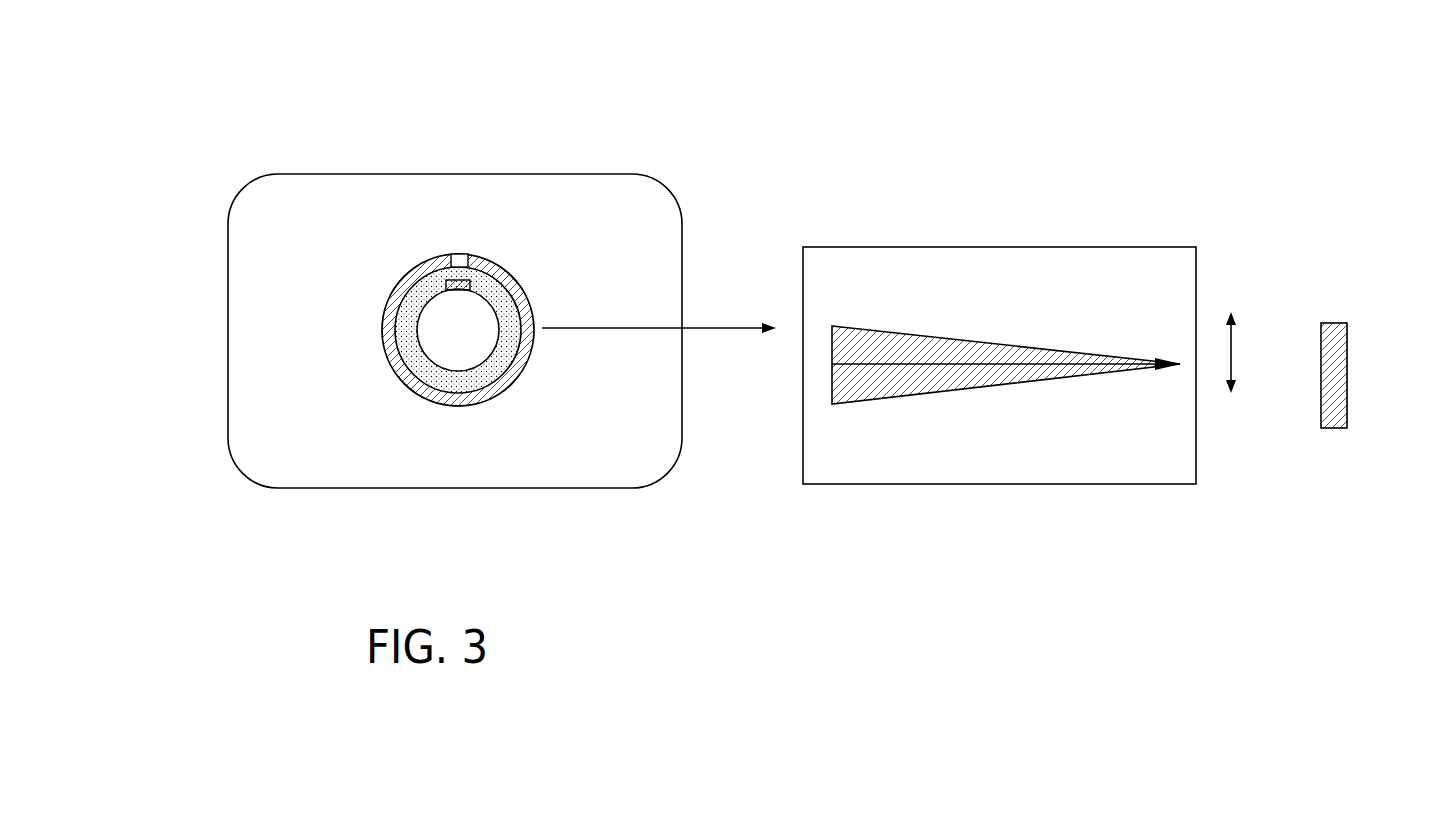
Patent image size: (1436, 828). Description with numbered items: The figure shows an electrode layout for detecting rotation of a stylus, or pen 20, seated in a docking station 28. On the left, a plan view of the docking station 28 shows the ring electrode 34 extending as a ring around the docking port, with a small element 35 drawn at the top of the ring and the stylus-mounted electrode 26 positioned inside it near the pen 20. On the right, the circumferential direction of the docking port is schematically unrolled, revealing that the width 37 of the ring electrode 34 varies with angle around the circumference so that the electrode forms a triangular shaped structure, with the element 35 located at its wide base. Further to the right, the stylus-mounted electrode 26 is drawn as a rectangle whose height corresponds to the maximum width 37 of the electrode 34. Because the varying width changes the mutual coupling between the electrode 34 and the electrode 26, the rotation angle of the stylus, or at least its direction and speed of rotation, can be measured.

The pen 20 is at (472, 333).
The stylus-mounted electrode 26 is at (446, 283).
The docking station 28 is at (235, 180).
The ring electrode 34 is at (481, 262).
The light source 35 is at (455, 255).
The width 37 is at (1231, 355).